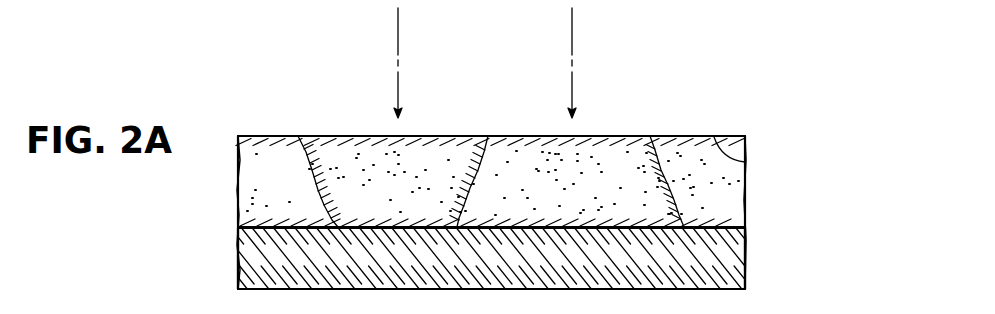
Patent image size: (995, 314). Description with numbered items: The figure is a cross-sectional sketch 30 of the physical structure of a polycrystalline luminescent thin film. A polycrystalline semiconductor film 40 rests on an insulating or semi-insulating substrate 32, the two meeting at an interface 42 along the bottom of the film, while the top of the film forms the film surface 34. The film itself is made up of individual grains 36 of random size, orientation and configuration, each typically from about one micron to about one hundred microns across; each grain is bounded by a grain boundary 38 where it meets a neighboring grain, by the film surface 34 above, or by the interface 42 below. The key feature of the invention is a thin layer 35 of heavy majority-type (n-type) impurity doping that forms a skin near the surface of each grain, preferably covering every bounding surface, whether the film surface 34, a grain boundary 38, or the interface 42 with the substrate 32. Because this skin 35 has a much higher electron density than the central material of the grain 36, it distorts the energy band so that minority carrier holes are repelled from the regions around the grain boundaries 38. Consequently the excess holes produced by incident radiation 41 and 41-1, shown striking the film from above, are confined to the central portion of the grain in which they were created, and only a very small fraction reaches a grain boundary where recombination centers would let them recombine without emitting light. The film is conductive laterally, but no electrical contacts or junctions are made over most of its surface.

The cross-sectional sketch 30 is at (333, 96).
The substrate 32 is at (733, 269).
The film surface 34 is at (700, 136).
The thin layer of heavy impurity doping 35 is at (680, 188).
The grains 36 is at (535, 136).
The grain boundary 38 is at (671, 137).
The polycrystalline semiconductor film 40 is at (605, 135).
The incident radiation 41 is at (573, 33).
The incident radiation 41-1 is at (399, 33).
The interface 42 is at (725, 227).